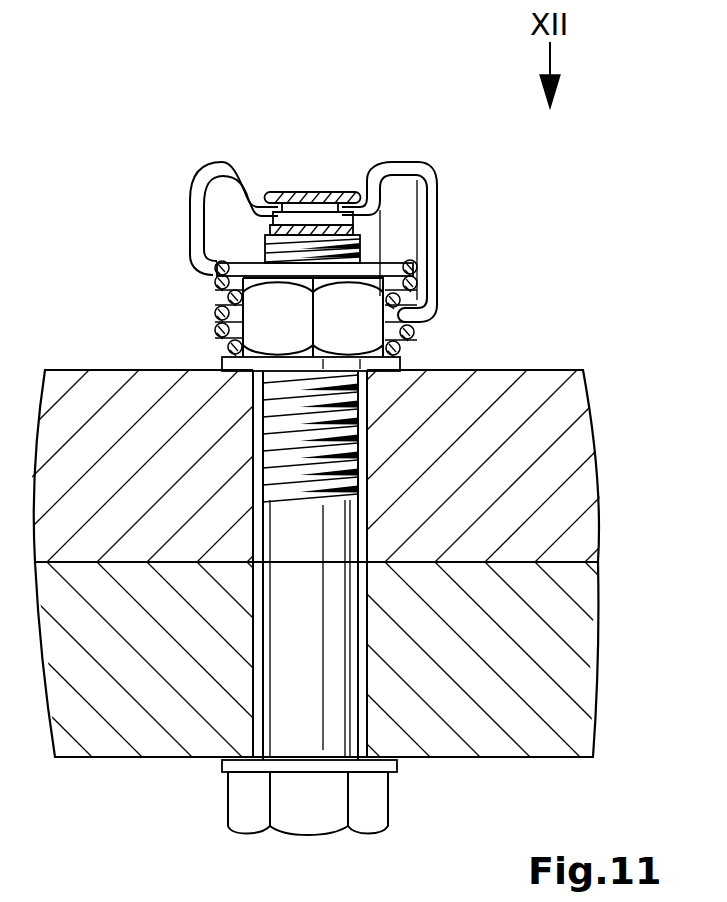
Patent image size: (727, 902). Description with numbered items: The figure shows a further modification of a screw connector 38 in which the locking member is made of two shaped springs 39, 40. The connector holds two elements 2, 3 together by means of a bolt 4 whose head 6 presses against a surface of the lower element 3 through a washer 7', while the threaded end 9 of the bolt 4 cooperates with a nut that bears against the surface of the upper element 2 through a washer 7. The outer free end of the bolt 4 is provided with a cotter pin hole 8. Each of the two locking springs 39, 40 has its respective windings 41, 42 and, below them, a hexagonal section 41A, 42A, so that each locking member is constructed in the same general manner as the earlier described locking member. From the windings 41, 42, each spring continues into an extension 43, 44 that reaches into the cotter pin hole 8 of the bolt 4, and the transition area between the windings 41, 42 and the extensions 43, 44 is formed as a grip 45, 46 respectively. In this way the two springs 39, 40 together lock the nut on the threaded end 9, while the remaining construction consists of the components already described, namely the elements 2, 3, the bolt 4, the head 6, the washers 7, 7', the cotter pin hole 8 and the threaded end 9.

The element 2 is at (601, 466).
The element 3 is at (583, 677).
The bolt 4 is at (273, 692).
The head 6 is at (377, 821).
The washer 7 is at (269, 354).
The washer 7' is at (280, 803).
The cotter pin hole 8 is at (322, 192).
The threaded end 9 is at (343, 452).
The connector 38 is at (565, 140).
The spring 39 is at (162, 132).
The spring 40 is at (465, 148).
The windings 41 is at (452, 292).
The hexagonal section 41A is at (232, 292).
The windings 42 is at (204, 305).
The hexagonal section 42A is at (398, 352).
The extension 43 is at (287, 190).
The extension 44 is at (356, 192).
The grip 45 is at (230, 160).
The grip 46 is at (430, 162).